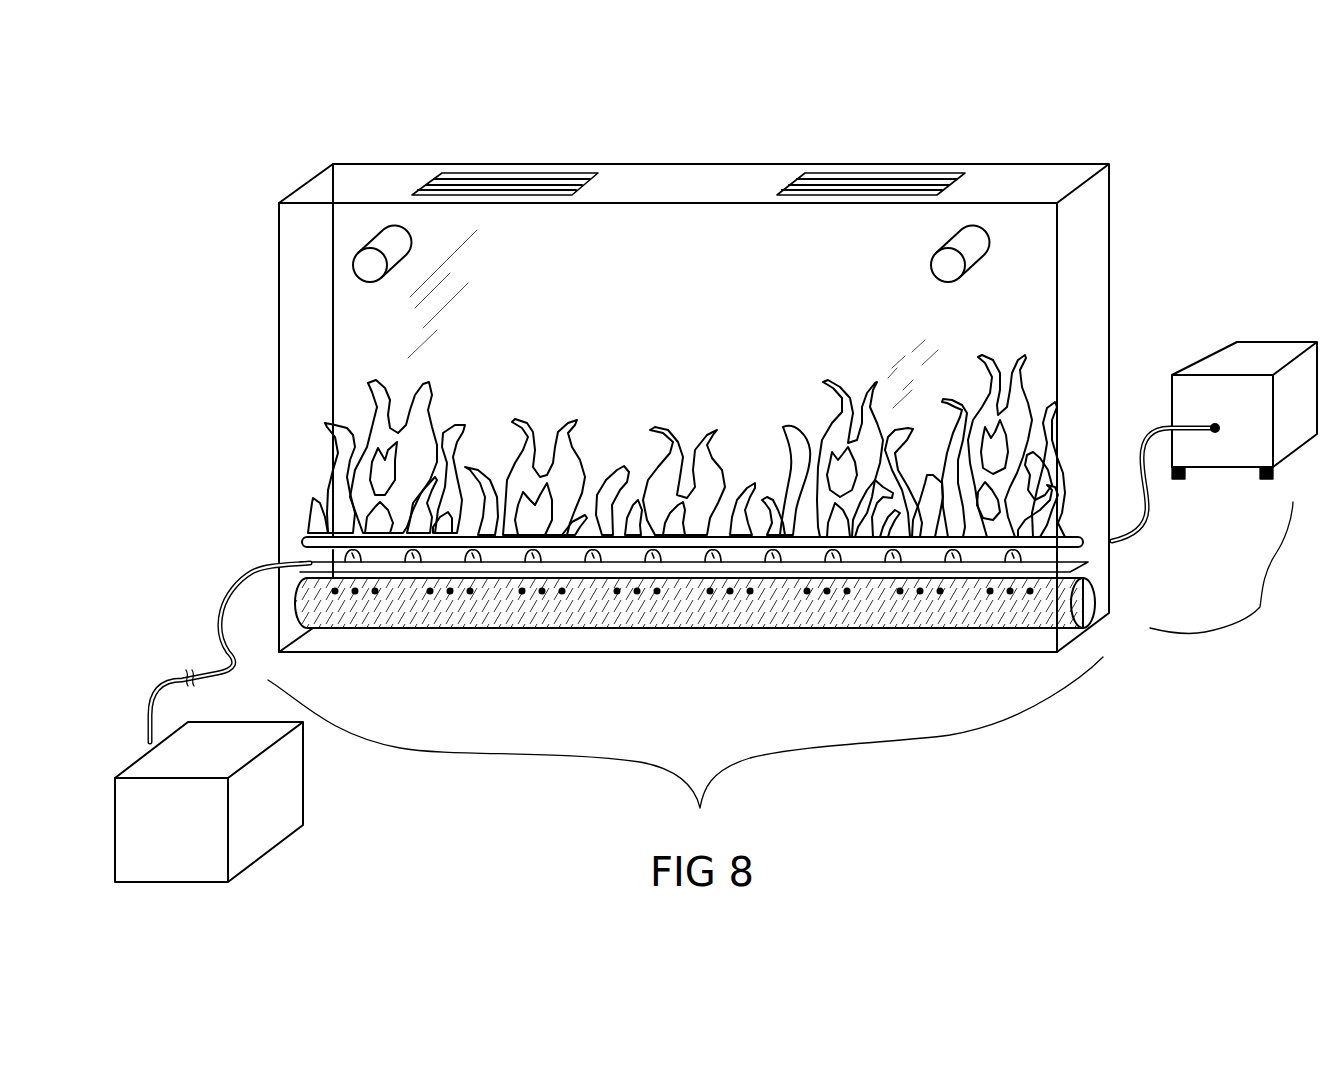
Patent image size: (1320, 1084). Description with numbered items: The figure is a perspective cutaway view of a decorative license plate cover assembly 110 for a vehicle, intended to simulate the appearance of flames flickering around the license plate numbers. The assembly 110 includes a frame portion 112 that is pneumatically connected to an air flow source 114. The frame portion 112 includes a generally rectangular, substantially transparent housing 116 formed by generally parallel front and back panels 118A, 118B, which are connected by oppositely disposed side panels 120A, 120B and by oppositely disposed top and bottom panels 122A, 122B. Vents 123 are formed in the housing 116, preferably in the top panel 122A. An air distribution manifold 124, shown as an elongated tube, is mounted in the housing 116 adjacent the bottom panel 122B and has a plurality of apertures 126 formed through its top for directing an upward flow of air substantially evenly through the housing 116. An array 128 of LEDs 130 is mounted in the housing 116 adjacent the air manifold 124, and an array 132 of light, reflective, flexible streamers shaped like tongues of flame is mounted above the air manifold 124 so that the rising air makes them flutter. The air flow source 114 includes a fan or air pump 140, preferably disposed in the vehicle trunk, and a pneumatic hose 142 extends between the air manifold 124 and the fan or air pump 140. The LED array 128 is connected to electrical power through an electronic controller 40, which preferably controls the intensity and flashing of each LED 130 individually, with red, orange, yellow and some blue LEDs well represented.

The decorative license plate cover assembly 110 is at (188, 302).
The frame portion 112 is at (685, 745).
The air flow source 114 is at (1221, 569).
The housing 116 is at (1112, 163).
The front panel 118A is at (690, 222).
The back panel 118B is at (725, 187).
The side panel 120A is at (300, 362).
The side panel 120B is at (1090, 268).
The top panel 122A is at (373, 183).
The bottom panel 122B is at (327, 642).
The vents 123 is at (915, 173).
The air distribution manifold 124 is at (1090, 630).
The apertures 126 is at (710, 594).
The array of LEDs 128 is at (310, 563).
The LEDs 130 is at (592, 560).
The array of streamers 132 is at (1068, 476).
The fan or air pump 140 is at (1202, 409).
The pneumatic hose 142 is at (1135, 537).
The electronic controller 40 is at (182, 832).